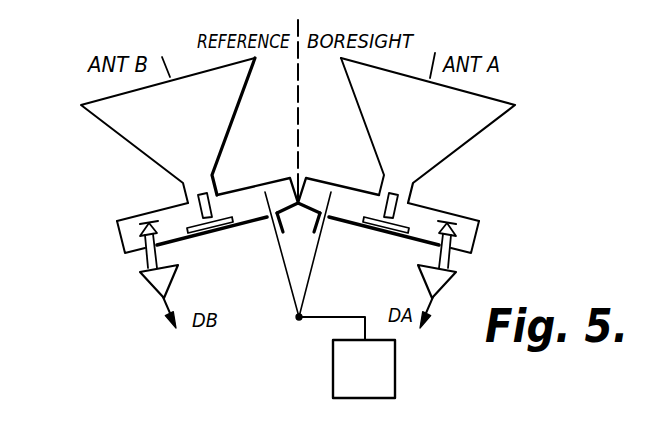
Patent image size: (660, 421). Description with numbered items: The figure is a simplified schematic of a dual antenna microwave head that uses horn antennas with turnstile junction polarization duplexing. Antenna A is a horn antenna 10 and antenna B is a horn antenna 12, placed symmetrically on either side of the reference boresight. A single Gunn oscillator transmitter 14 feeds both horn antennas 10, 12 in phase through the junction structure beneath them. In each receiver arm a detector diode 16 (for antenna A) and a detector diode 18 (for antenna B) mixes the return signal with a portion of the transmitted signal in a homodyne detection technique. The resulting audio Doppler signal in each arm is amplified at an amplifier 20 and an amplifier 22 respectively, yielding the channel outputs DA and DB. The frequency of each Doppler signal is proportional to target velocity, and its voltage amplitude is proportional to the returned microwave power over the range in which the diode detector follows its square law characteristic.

The horn antenna 10 is at (482, 135).
The horn antenna 12 is at (120, 137).
The Gunn oscillator transmitter 14 is at (395, 368).
The detector diode 16 is at (460, 222).
The detector diode 18 is at (135, 222).
The amplifier 20 is at (420, 278).
The amplifier 22 is at (152, 290).